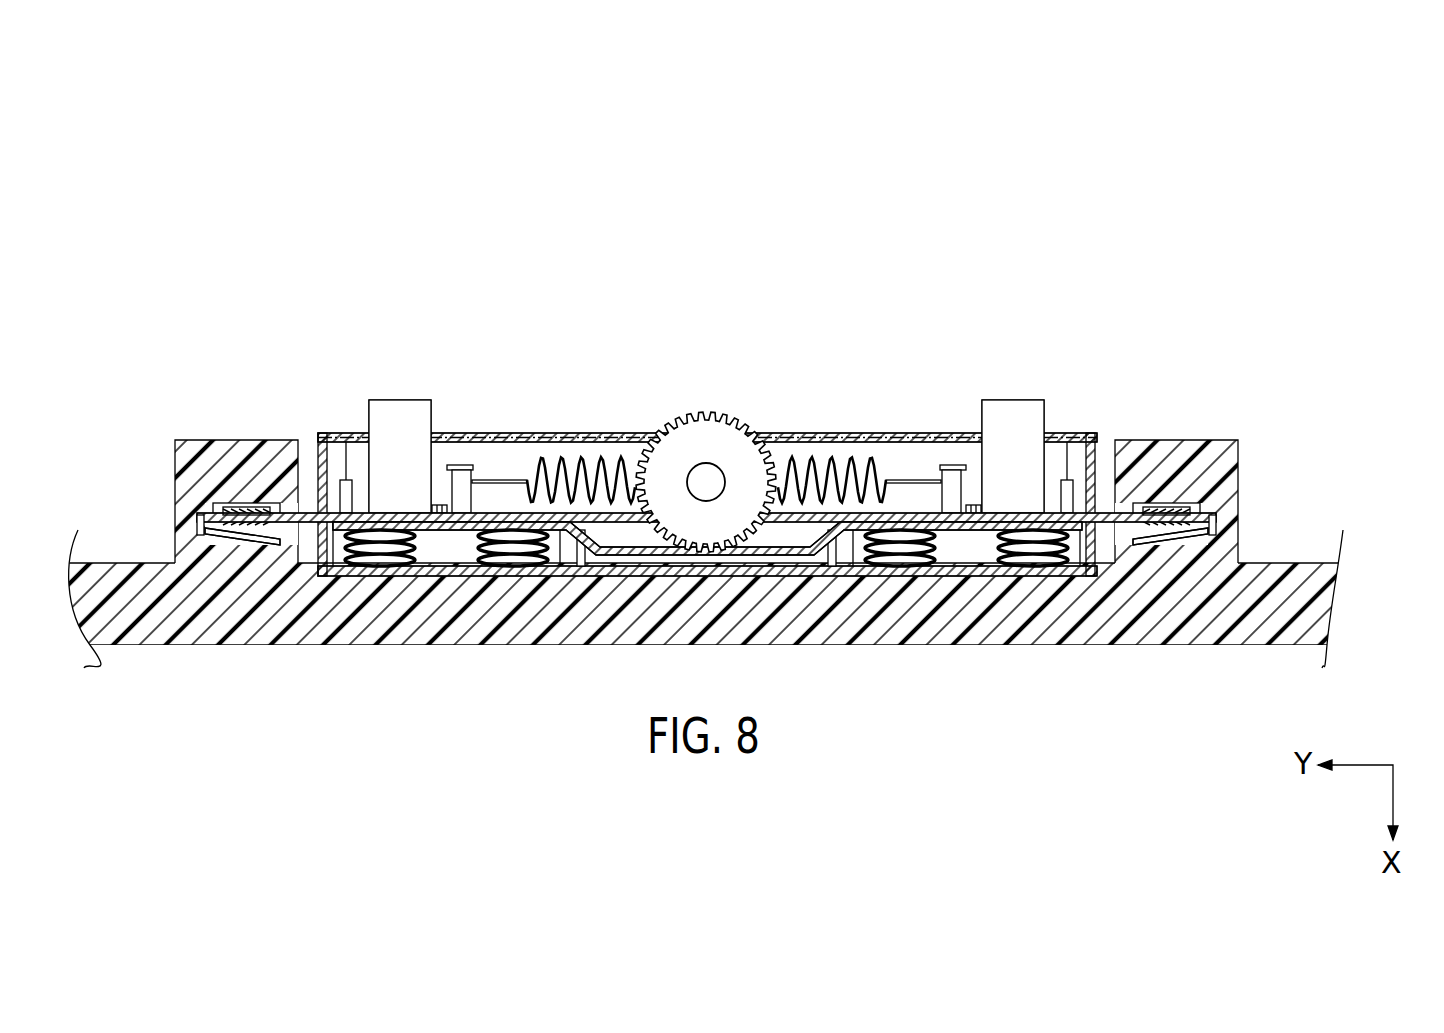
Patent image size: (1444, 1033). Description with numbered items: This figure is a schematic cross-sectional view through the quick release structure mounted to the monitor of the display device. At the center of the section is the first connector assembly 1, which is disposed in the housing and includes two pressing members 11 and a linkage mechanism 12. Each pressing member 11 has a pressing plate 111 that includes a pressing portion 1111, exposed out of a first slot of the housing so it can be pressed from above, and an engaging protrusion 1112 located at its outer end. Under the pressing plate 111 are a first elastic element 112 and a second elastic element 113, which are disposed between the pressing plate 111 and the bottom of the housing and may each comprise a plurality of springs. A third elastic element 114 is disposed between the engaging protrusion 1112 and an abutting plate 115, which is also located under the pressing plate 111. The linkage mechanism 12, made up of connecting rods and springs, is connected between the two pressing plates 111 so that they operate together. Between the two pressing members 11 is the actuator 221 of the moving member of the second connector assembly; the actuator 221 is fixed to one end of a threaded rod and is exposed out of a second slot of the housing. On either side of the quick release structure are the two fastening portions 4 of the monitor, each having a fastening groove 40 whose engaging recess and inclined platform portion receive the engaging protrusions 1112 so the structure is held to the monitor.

The first connector assembly 1 is at (1270, 125).
The pressing member 11 is at (1320, 242).
The pressing plate 111 is at (1382, 53).
The pressing portion 1111 is at (400, 410).
The engaging protrusion 1112 is at (212, 408).
The first elastic element 112 is at (375, 678).
The second elastic element 113 is at (497, 678).
The third elastic element 114 is at (200, 678).
The abutting plate 115 is at (290, 678).
The linkage mechanism 12 is at (497, 508).
The actuator 221 is at (712, 412).
The fastening portion 4 is at (171, 489).
The fastening groove 40 is at (180, 518).